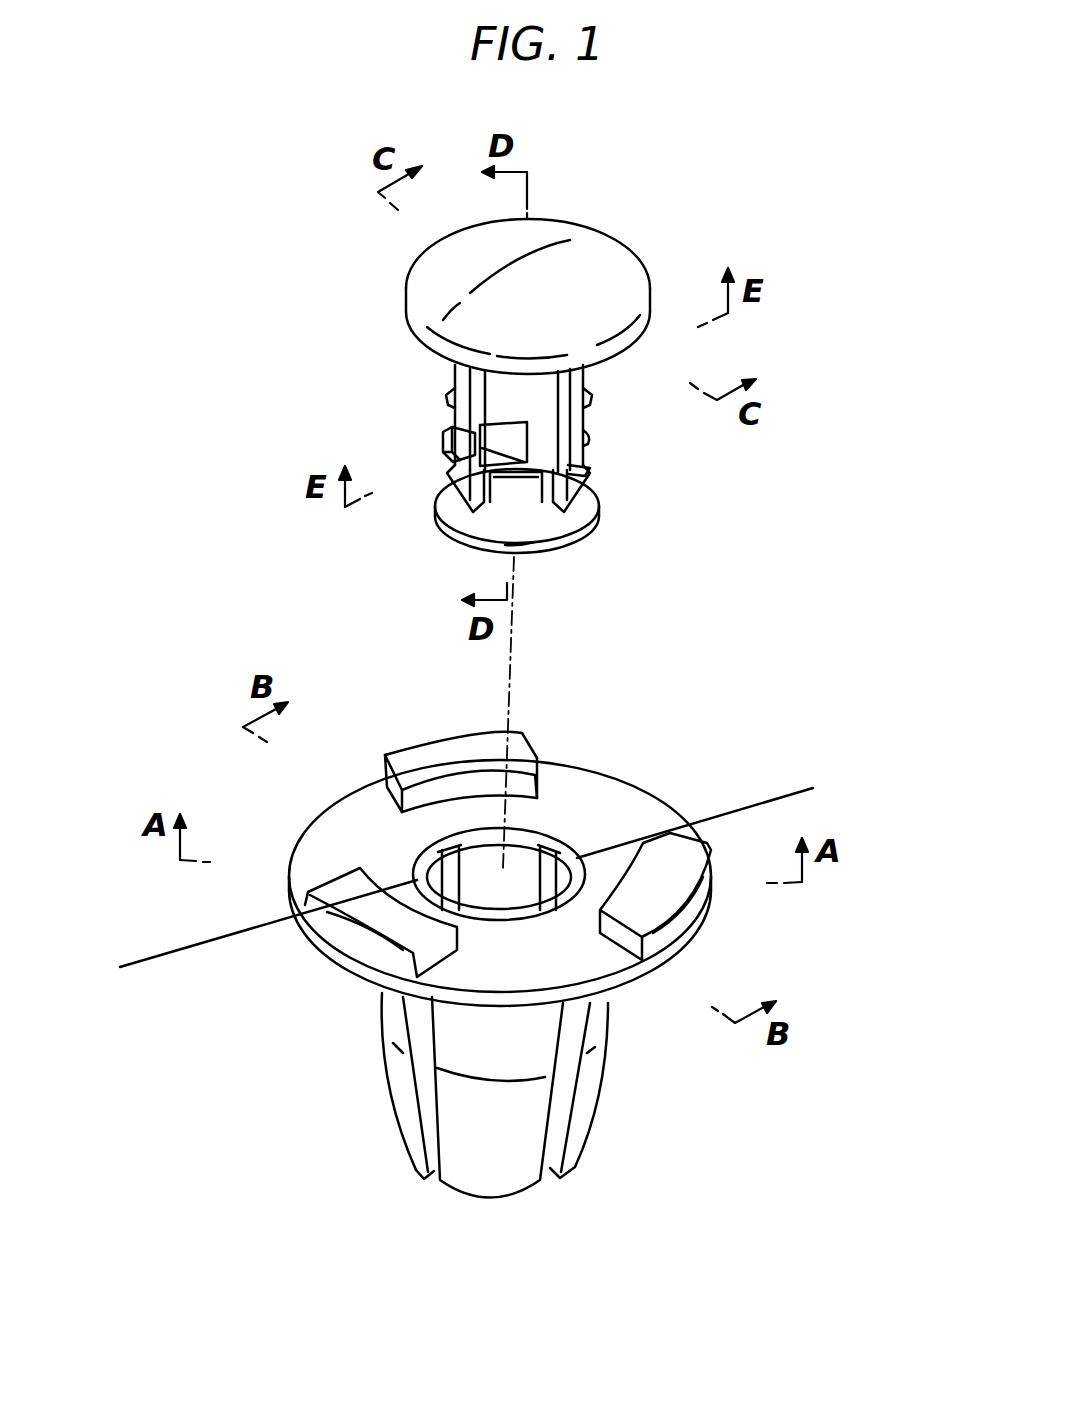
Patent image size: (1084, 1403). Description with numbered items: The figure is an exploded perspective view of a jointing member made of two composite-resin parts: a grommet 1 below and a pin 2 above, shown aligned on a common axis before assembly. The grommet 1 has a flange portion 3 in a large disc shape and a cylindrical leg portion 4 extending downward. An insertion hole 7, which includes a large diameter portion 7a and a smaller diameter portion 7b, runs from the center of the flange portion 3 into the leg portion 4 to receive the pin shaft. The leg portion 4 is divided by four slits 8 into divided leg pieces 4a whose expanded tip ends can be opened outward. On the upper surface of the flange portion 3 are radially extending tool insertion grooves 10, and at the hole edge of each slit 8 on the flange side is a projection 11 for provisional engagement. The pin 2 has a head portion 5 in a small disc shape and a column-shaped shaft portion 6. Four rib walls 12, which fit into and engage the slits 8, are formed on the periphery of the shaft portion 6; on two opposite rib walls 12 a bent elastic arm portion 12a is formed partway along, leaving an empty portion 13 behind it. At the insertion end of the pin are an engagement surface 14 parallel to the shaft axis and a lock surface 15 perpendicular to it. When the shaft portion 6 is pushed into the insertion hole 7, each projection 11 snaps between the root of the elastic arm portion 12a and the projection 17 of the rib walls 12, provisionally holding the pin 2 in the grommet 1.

The grommet 1 is at (687, 742).
The pin 2 is at (693, 236).
The flange portion 3 is at (433, 755).
The leg portion 4 is at (443, 1023).
The divided leg piece 4a is at (407, 1143).
The head portion 5 is at (610, 253).
The shaft portion 6 is at (493, 390).
The insertion hole 7 is at (518, 873).
The large diameter portion 7a is at (710, 811).
The smaller diameter portion 7b is at (250, 932).
The slit 8 is at (420, 1098).
The tool insertion groove 10 is at (307, 857).
The projection for provisional engagement 11 is at (437, 838).
The rib wall 12 is at (575, 440).
The elastic arm portion 12a is at (445, 447).
The empty portion 13 is at (487, 432).
The engagement surface 14 is at (525, 523).
The lock surface 15 is at (472, 528).
The projection 17 is at (450, 472).